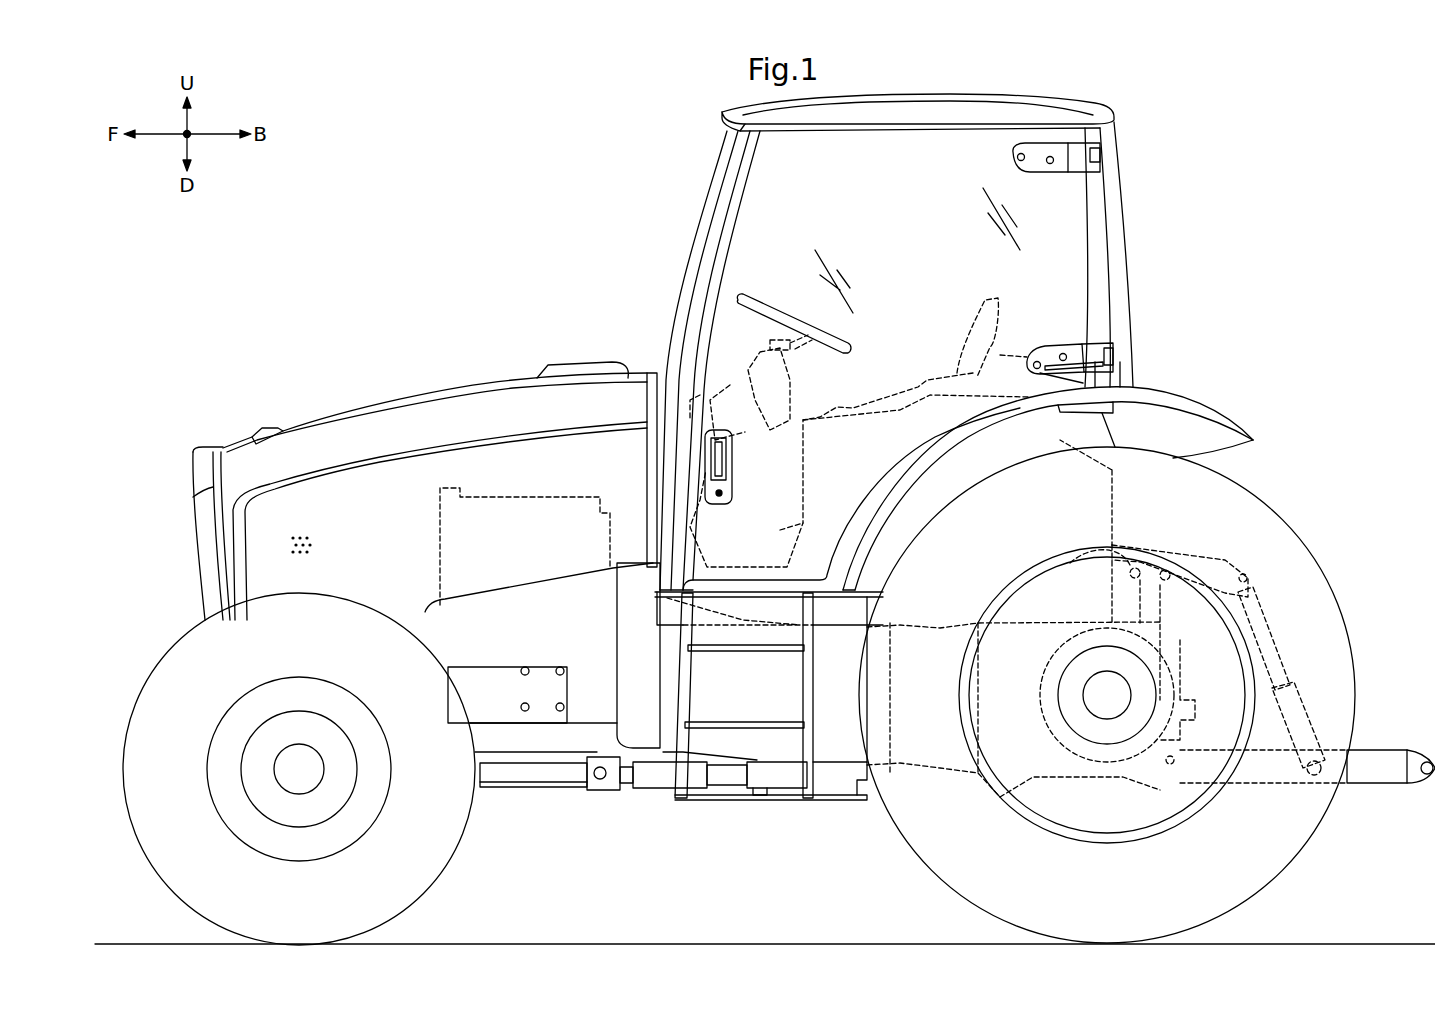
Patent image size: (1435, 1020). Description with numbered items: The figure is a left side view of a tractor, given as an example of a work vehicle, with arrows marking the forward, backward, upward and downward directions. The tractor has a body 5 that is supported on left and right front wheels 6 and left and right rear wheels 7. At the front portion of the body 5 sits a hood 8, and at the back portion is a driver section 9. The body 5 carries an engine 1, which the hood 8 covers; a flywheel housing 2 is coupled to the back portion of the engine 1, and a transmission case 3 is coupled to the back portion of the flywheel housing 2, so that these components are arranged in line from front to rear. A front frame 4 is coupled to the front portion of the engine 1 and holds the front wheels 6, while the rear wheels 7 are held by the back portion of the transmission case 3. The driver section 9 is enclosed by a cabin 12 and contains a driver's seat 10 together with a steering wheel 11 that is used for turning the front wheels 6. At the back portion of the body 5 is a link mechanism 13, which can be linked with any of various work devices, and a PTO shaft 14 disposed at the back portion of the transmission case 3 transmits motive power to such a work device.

The engine 1 is at (583, 713).
The flywheel housing 2 is at (643, 740).
The transmission case 3 is at (840, 740).
The front frame 4 is at (497, 672).
The body 5 is at (777, 767).
The front wheels 6 is at (452, 860).
The rear wheels 7 is at (923, 866).
The hood 8 is at (434, 384).
The driver section 9 is at (933, 331).
The driver's seat 10 is at (963, 330).
The steering wheel 11 is at (783, 317).
The cabin 12 is at (1075, 117).
The link mechanism 13 is at (1380, 791).
The PTO shaft 14 is at (1242, 762).